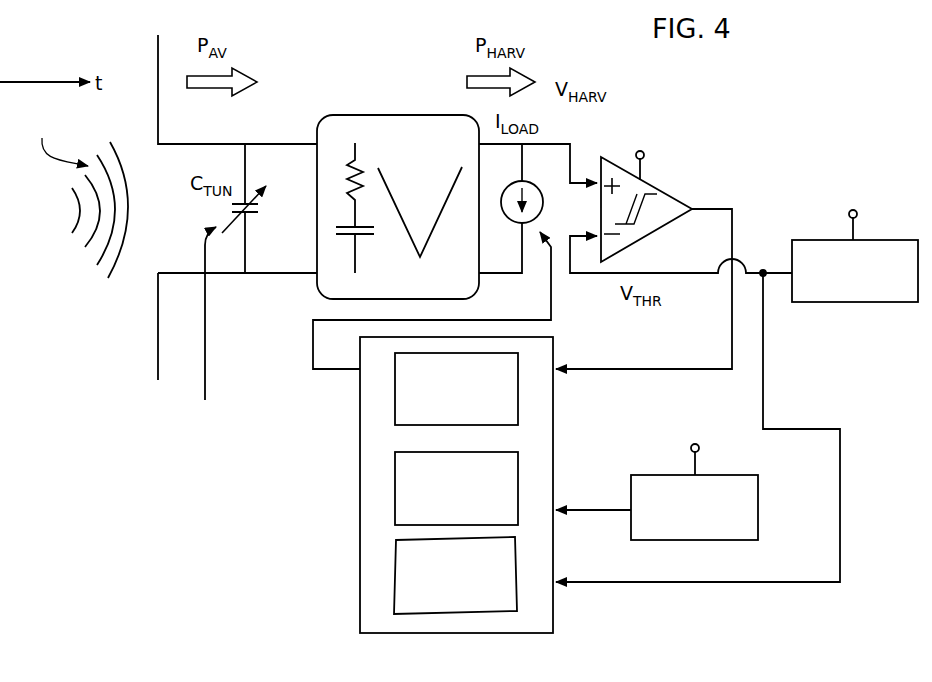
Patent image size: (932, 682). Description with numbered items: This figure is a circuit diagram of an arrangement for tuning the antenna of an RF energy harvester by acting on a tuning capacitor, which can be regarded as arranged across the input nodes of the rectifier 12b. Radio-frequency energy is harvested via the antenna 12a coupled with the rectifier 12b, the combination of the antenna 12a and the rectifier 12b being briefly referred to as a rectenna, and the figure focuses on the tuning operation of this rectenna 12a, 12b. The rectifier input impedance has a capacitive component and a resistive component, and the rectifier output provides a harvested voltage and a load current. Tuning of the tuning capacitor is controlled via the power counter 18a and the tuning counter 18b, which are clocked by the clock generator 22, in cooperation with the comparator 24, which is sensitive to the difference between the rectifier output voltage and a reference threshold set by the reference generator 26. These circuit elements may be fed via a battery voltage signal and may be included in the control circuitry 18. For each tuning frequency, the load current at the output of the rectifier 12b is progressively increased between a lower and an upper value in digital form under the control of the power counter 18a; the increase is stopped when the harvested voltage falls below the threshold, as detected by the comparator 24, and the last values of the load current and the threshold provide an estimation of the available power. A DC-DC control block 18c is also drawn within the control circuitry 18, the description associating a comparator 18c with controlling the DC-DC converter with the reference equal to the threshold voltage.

The antenna 12a is at (127, 292).
The rectifier 12b is at (389, 108).
The control circuitry 18 is at (368, 436).
The power counter 18a is at (518, 400).
The tuning counter 18b is at (400, 492).
The comparator 18c is at (400, 578).
The clock generator 22 is at (758, 518).
The comparator 24 is at (668, 203).
The reference generator 26 is at (866, 303).